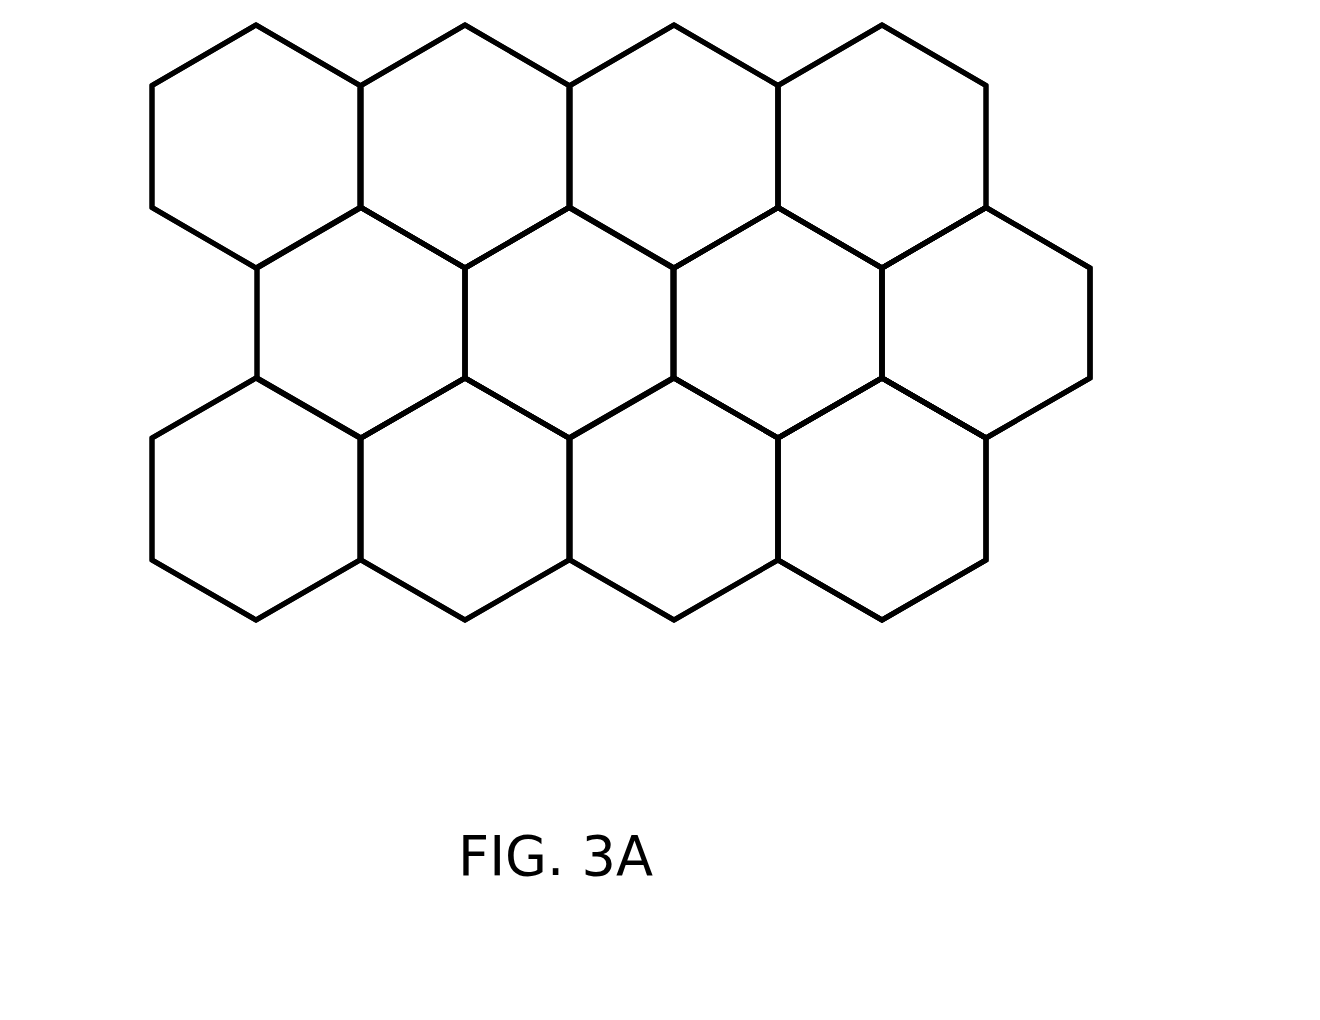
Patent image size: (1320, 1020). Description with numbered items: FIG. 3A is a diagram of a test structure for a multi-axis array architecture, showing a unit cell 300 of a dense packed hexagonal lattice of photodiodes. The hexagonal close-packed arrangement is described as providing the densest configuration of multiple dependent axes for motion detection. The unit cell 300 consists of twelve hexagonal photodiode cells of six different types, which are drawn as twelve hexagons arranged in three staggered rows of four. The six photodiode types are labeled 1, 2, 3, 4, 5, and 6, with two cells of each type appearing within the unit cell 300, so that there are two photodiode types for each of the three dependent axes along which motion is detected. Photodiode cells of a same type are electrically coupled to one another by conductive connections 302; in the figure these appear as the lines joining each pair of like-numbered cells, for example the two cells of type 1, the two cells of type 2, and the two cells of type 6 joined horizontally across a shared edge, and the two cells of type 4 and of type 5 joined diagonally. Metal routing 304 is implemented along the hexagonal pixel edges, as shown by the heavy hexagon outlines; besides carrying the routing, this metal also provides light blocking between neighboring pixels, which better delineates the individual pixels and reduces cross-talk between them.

The photodiode type 1 is at (876, 500).
The photodiode type 2 is at (455, 146).
The photodiode type 3 is at (876, 146).
The photodiode type 4 is at (260, 488).
The photodiode type 5 is at (468, 490).
The photodiode type 6 is at (980, 325).
The unit cell 300 is at (1052, 874).
The conductive connections 302 is at (830, 505).
The metal routing 304 is at (943, 412).